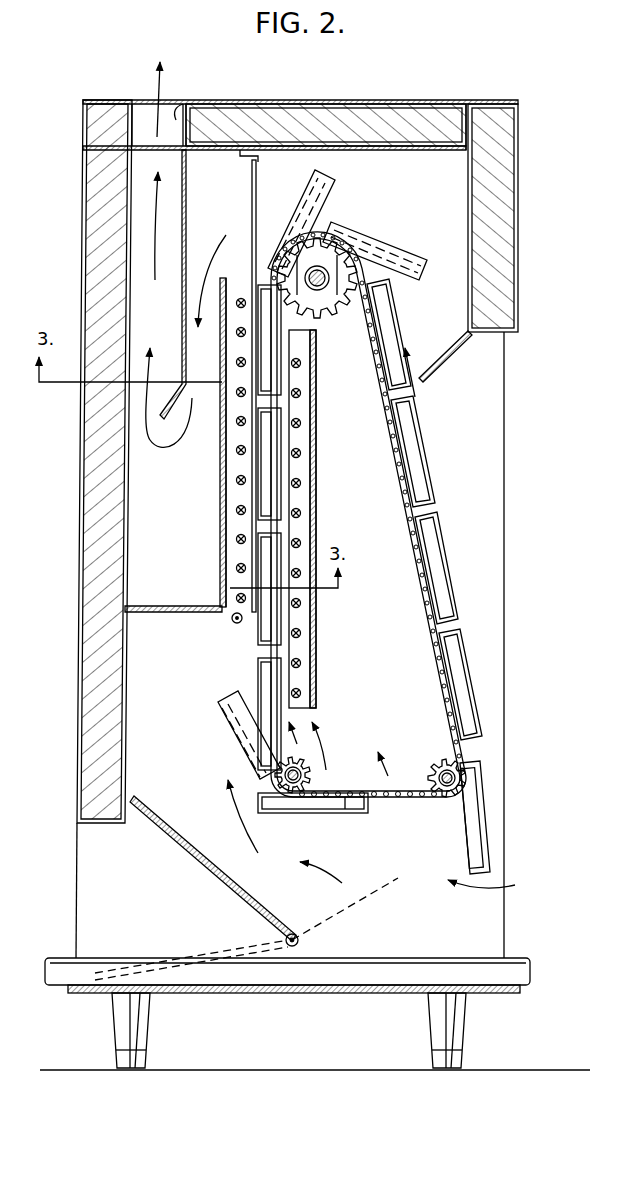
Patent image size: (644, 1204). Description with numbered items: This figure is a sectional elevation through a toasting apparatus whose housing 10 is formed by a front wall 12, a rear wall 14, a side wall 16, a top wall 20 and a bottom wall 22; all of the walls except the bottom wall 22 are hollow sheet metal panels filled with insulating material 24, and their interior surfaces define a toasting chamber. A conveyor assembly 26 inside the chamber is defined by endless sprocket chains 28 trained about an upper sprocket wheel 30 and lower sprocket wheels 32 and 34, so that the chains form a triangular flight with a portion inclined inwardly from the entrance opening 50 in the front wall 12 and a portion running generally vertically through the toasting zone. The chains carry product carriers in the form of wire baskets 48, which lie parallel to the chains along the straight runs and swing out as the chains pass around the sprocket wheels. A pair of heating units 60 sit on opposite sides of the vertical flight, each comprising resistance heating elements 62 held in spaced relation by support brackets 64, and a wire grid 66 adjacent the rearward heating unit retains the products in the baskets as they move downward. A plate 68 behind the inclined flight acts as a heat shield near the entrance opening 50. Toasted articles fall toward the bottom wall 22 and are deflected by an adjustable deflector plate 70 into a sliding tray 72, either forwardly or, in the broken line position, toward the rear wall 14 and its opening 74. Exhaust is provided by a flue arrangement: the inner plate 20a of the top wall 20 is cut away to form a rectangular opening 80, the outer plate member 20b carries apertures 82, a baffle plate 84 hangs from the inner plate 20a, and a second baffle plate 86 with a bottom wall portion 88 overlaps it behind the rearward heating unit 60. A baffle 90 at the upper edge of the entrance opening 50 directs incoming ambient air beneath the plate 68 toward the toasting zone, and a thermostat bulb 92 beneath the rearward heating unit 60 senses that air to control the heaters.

The housing 10 is at (475, 82).
The front wall 12 is at (518, 219).
The rear wall 14 is at (81, 250).
The side wall 16 is at (345, 470).
The top wall 20 is at (263, 100).
The inner plate 20a is at (347, 147).
The outer plate member 20b is at (322, 100).
The bottom wall 22 is at (276, 993).
The insulating material 24 is at (235, 114).
The conveyor assembly 26 is at (326, 522).
The sprocket chain 28 is at (390, 800).
The upper sprocket wheel 30 is at (303, 258).
The lower sprocket wheel 32 is at (314, 787).
The lower sprocket wheel 34 is at (444, 800).
The wire basket 48 is at (388, 246).
The entrance opening 50 is at (505, 598).
The heating unit 60 is at (236, 262).
The heating element 62 is at (240, 451).
The support bracket 64 is at (222, 481).
The wire grid 66 is at (253, 190).
The plate 68 is at (408, 545).
The deflector plate 70 is at (217, 882).
The tray 72 is at (463, 973).
The opening 74 is at (84, 873).
The rectangular opening 80 is at (175, 100).
The apertures 82 is at (151, 98).
The baffle plate 84 is at (182, 296).
The second baffle plate 86 is at (222, 527).
The bottom wall portion 88 is at (180, 607).
The baffle 90 is at (447, 353).
The thermostat bulb 92 is at (232, 622).